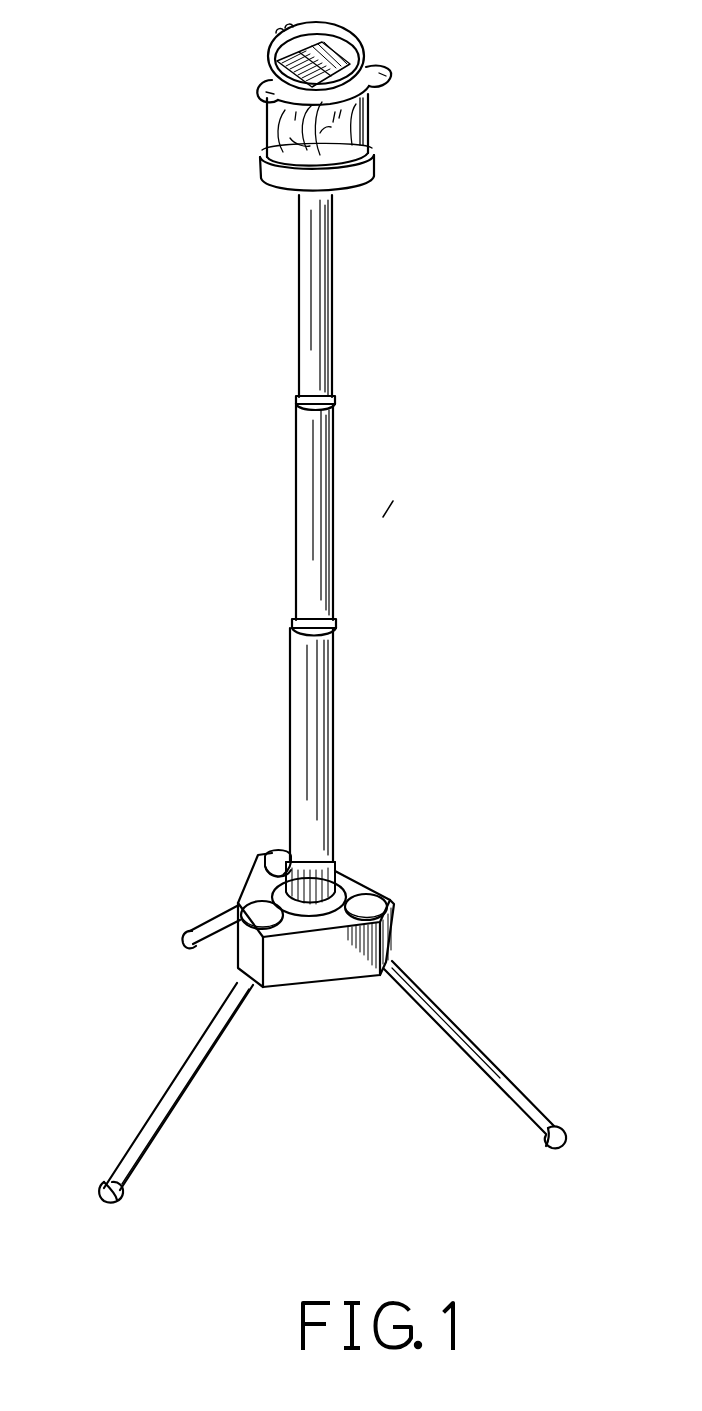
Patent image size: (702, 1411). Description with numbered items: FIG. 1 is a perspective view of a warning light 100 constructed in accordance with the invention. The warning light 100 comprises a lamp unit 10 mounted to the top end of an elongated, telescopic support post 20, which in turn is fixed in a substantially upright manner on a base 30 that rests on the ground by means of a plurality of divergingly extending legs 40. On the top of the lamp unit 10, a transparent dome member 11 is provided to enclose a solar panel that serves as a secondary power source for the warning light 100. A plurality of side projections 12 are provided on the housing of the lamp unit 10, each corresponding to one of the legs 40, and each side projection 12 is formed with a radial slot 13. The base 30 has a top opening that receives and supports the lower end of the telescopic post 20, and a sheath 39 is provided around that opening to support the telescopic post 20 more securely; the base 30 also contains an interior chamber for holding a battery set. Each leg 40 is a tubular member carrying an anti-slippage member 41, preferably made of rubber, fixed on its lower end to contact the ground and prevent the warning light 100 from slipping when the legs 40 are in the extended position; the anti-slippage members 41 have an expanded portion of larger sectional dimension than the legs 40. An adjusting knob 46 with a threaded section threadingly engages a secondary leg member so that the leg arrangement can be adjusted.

The warning light 100 is at (383, 517).
The lamp unit 10 is at (373, 153).
The transparent dome member 11 is at (330, 25).
The side projection 12 is at (373, 70).
The radial slot 13 is at (390, 78).
The telescopic support post 20 is at (303, 557).
The base 30 is at (358, 882).
The sheath 39 is at (333, 867).
The adjusting knob 46 is at (278, 851).
The leg 40 is at (188, 1067).
The anti-slippage member 41 is at (103, 1177).